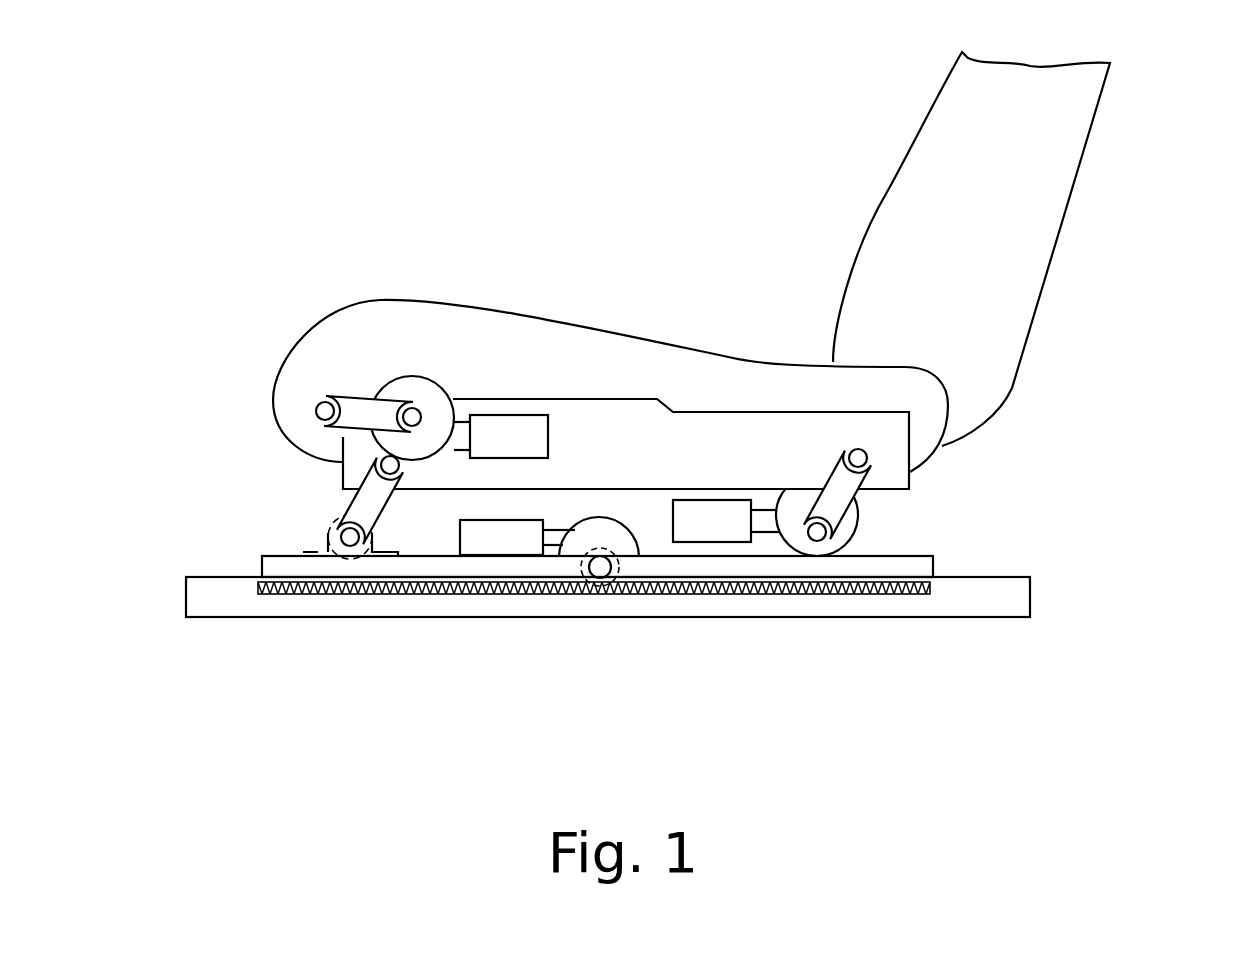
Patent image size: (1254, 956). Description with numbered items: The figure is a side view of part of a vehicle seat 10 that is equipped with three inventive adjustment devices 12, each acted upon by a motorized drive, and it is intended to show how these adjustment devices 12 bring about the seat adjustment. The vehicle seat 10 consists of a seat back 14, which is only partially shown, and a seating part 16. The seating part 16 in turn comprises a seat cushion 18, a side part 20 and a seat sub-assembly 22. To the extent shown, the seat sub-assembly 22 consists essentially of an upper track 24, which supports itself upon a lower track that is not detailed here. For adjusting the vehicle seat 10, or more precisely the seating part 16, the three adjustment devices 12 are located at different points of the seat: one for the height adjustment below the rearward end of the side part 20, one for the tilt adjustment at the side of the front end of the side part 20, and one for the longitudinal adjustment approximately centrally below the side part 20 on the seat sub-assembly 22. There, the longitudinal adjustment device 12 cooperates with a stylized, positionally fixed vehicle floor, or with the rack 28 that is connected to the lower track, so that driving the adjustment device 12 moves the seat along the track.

The vehicle seat 10 is at (610, 292).
The adjustment devices 12 is at (668, 498).
The seat back 14 is at (887, 237).
The seating part 16 is at (270, 348).
The seat cushion 18 is at (378, 328).
The side part 20 is at (758, 432).
The seat sub-assembly 22 is at (275, 557).
The upper track 24 is at (872, 565).
The rack 28 is at (703, 594).